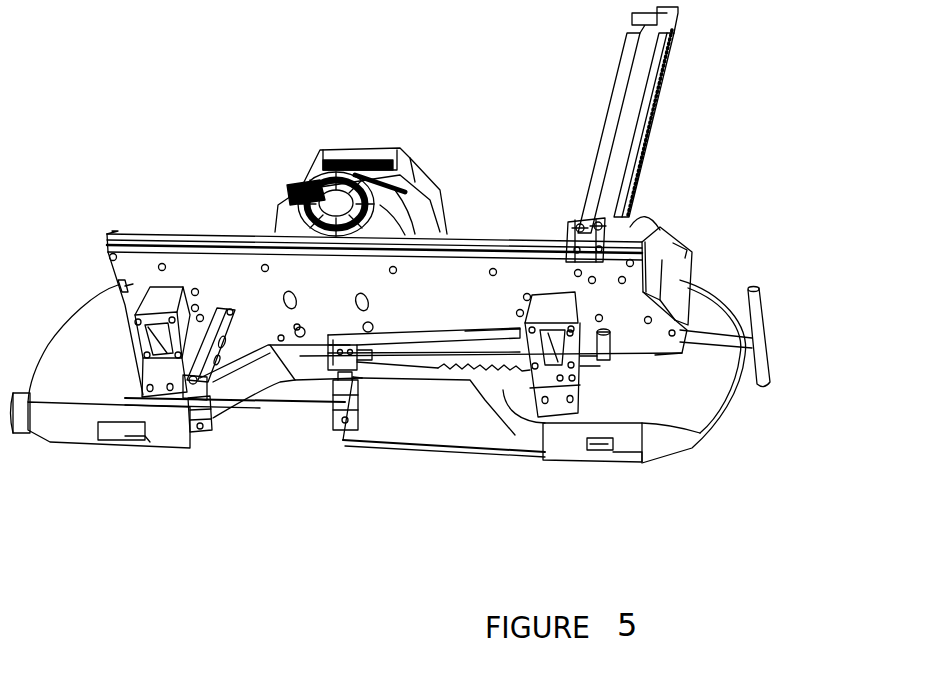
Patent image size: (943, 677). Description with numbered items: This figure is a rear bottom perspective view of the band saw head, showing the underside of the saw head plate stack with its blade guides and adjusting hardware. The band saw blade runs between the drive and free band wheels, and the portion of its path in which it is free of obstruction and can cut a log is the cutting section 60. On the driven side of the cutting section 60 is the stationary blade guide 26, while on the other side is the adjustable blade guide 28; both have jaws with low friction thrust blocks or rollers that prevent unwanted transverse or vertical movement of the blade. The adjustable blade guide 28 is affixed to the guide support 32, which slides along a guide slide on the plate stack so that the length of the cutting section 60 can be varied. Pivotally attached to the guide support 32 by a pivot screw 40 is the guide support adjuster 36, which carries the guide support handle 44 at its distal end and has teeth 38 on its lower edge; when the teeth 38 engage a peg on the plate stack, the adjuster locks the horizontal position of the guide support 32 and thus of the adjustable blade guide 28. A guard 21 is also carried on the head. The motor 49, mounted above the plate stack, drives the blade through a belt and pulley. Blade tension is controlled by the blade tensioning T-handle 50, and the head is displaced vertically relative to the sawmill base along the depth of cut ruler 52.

The guard 21 is at (677, 393).
The stationary blade guide 26 is at (204, 432).
The adjustable blade guide 28 is at (335, 437).
The guide support 32 is at (378, 343).
The guide support adjuster 36 is at (417, 363).
The teeth 38 is at (470, 372).
The pivot screw 40 is at (367, 360).
The guide support handle 44 is at (617, 350).
The motor 49 is at (390, 163).
The blade tensioning T-handle 50 is at (758, 313).
The depth of cut ruler 52 is at (655, 92).
The cutting section 60 is at (312, 447).